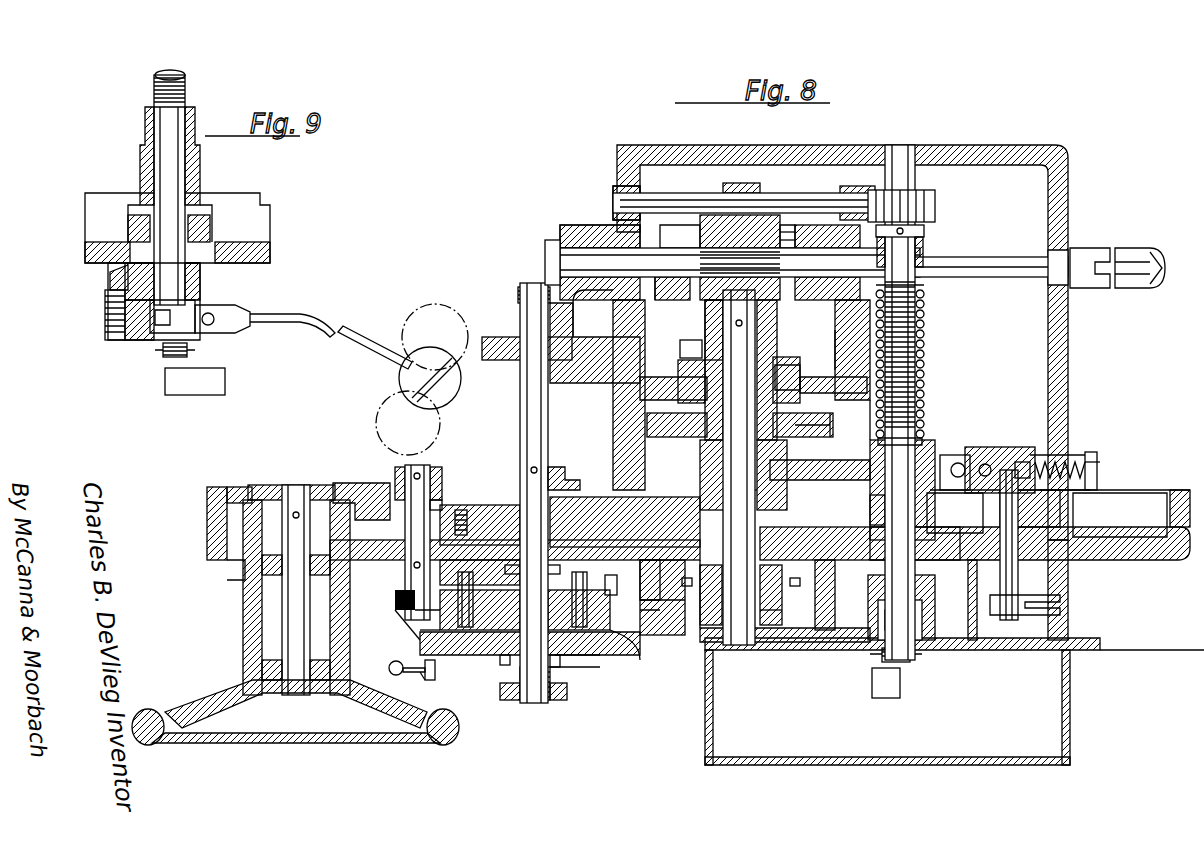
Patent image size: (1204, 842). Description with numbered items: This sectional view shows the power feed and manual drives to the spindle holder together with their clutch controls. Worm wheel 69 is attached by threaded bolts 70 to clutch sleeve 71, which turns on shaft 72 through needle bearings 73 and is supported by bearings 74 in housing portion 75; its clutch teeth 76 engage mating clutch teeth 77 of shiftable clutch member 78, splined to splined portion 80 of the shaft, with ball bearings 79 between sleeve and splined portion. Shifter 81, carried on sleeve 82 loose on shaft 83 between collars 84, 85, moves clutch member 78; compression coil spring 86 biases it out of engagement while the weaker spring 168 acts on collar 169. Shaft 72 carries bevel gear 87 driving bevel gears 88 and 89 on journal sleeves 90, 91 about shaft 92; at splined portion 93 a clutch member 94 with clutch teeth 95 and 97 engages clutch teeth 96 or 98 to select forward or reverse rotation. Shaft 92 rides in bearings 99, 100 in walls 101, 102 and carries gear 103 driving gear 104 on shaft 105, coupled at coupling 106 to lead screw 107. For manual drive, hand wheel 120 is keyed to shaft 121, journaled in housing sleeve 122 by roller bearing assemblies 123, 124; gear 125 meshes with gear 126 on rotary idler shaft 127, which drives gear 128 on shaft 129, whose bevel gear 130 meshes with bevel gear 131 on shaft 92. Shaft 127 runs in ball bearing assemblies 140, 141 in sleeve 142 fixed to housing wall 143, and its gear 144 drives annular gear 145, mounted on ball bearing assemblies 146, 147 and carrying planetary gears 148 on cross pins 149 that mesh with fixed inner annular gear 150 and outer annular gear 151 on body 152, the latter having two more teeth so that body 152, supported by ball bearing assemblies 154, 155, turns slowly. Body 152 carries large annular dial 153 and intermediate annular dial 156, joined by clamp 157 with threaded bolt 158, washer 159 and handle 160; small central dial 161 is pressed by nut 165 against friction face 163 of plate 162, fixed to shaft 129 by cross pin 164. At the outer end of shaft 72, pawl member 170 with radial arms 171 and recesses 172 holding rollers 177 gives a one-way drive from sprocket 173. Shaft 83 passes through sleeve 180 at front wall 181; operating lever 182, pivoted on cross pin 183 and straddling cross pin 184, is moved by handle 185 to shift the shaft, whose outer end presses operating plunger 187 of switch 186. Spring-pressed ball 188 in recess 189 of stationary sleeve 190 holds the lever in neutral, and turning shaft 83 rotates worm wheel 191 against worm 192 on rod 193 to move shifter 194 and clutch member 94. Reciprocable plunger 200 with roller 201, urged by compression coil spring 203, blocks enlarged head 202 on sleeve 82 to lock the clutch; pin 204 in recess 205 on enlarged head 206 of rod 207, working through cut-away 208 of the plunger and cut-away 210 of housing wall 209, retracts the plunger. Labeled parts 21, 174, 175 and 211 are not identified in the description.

In FIG. 8, the bearing 21 is at (805, 588).
In FIG. 8, the worm wheel 69 is at (835, 424).
In FIG. 8, the threaded bolts 70 is at (685, 438).
In FIG. 8, the clutch sleeve 71 is at (783, 365).
In FIG. 8, the shaft 72 is at (739, 467).
In FIG. 8, the needle bearings 73 is at (777, 322).
In FIG. 8, the bearings 74 is at (800, 370).
In FIG. 8, the housing portion 75 is at (630, 356).
In FIG. 8, the clutch teeth 76 is at (783, 445).
In FIG. 8, the clutch teeth 77 is at (705, 450).
In FIG. 8, the shiftable clutch member 78 is at (775, 495).
In FIG. 8, the ball bearings 79 is at (790, 414).
In FIG. 8, the splined portion 80 is at (728, 495).
In FIG. 8, the shifter 81 is at (825, 480).
In FIG. 8, the sleeve 82 is at (918, 412).
In FIG. 9, the shaft 83 is at (180, 122).
In FIG. 8, the shaft 83 is at (916, 395).
In FIG. 8, the collar 84 is at (920, 510).
In FIG. 8, the collar 85 is at (925, 392).
In FIG. 8, the compression coil spring 86 is at (878, 420).
In FIG. 8, the bevel gear 87 is at (700, 330).
In FIG. 8, the bevel gear 88 is at (840, 330).
In FIG. 8, the bevel gear 89 is at (705, 300).
In FIG. 8, the journal sleeve 90 is at (798, 245).
In FIG. 8, the journal sleeve 91 is at (660, 302).
In FIG. 8, the shaft 92 is at (740, 262).
In FIG. 8, the splined portion 93 is at (690, 290).
In FIG. 8, the clutch member 94 is at (780, 222).
In FIG. 8, the clutch teeth 95 is at (788, 222).
In FIG. 8, the clutch teeth 96 is at (795, 225).
In FIG. 8, the clutch teeth 97 is at (725, 215).
In FIG. 8, the clutch teeth 98 is at (700, 222).
In FIG. 8, the bearing 99 is at (600, 226).
In FIG. 8, the bearing 100 is at (845, 350).
In FIG. 8, the wall 101 is at (625, 312).
In FIG. 8, the wall 102 is at (848, 347).
In FIG. 8, the gear 103 is at (924, 248).
In FIG. 8, the gear 104 is at (924, 231).
In FIG. 8, the shaft 105 is at (980, 277).
In FIG. 8, the coupling 106 is at (1112, 292).
In FIG. 8, the lead screw 107 is at (1132, 258).
In FIG. 8, the hand wheel 120 is at (448, 745).
In FIG. 8, the shaft 121 is at (282, 595).
In FIG. 8, the housing sleeve 122 is at (262, 620).
In FIG. 8, the roller bearing assembly 123 is at (262, 650).
In FIG. 8, the roller bearing assembly 124 is at (275, 530).
In FIG. 8, the gear 125 is at (265, 487).
In FIG. 8, the gear 126 is at (358, 487).
In FIG. 8, the rotary idler shaft 127 is at (430, 478).
In FIG. 8, the gear 128 is at (562, 470).
In FIG. 8, the shaft 129 is at (548, 402).
In FIG. 8, the bevel gear 130 is at (518, 300).
In FIG. 8, the bevel gear 131 is at (548, 245).
In FIG. 8, the ball bearing assembly 140 is at (432, 480).
In FIG. 8, the ball bearing assembly 141 is at (442, 500).
In FIG. 8, the sleeve 142 is at (468, 518).
In FIG. 8, the housing wall 143 is at (478, 540).
In FIG. 8, the gear 144 is at (440, 580).
In FIG. 8, the annular gear 145 is at (448, 578).
In FIG. 8, the ball bearing assembly 146 is at (568, 578).
In FIG. 8, the ball bearing assembly 147 is at (518, 572).
In FIG. 8, the planetary gears 148 is at (590, 622).
In FIG. 8, the cross pins 149 is at (608, 578).
In FIG. 8, the inner annular gear 150 is at (655, 570).
In FIG. 8, the outer annular gear 151 is at (650, 630).
In FIG. 8, the body 152 is at (485, 655).
In FIG. 8, the large annular dial 153 is at (400, 640).
In FIG. 8, the ball bearing assembly 154 is at (500, 660).
In FIG. 8, the ball bearing assembly 155 is at (615, 665).
In FIG. 8, the intermediate annular dial 156 is at (398, 675).
In FIG. 8, the clamp 157 is at (428, 672).
In FIG. 8, the threaded bolt 158 is at (440, 672).
In FIG. 8, the washer 159 is at (420, 680).
In FIG. 8, the handle 160 is at (415, 650).
In FIG. 8, the small central dial 161 is at (598, 660).
In FIG. 8, the plate 162 is at (565, 665).
In FIG. 8, the friction face 163 is at (580, 680).
In FIG. 8, the cross pin 164 is at (535, 700).
In FIG. 8, the nut 165 is at (552, 702).
In FIG. 8, the compression coil spring 168 is at (925, 333).
In FIG. 8, the collar 169 is at (925, 300).
In FIG. 8, the pawl member 170 is at (760, 642).
In FIG. 8, the radial arms 171 is at (782, 598).
In FIG. 8, the recesses 172 is at (715, 645).
In FIG. 8, the sprocket 173 is at (690, 640).
In FIG. 8, the bearing 174 is at (775, 585).
In FIG. 8, the bearing 175 is at (782, 612).
In FIG. 8, the rollers 177 is at (665, 620).
In FIG. 9, the sleeve 180 is at (135, 340).
In FIG. 8, the sleeve 180 is at (935, 600).
In FIG. 9, the front wall 181 is at (85, 258).
In FIG. 8, the front wall 181 is at (860, 533).
In FIG. 9, the operating lever 182 is at (352, 343).
In FIG. 9, the cross pin 183 is at (214, 317).
In FIG. 9, the cross pin 184 is at (158, 335).
In FIG. 8, the cross pin 184 is at (878, 612).
In FIG. 9, the handle 185 is at (400, 387).
In FIG. 9, the snap-acting switch 186 is at (215, 392).
In FIG. 8, the snap-acting switch 186 is at (900, 688).
In FIG. 9, the operating plunger 187 is at (190, 348).
In FIG. 8, the operating plunger 187 is at (878, 662).
In FIG. 9, the spring-pressed ball 188 is at (108, 310).
In FIG. 9, the recess 189 is at (115, 282).
In FIG. 9, the stationary sleeve 190 is at (128, 272).
In FIG. 8, the worm wheel 191 is at (935, 200).
In FIG. 8, the worm 192 is at (862, 165).
In FIG. 8, the rod 193 is at (613, 195).
In FIG. 8, the shifter 194 is at (748, 193).
In FIG. 8, the plunger 200 is at (1000, 447).
In FIG. 8, the roller 201 is at (985, 463).
In FIG. 8, the enlarged head 202 is at (958, 462).
In FIG. 8, the compression coil spring 203 is at (1088, 470).
In FIG. 8, the pin 204 is at (1095, 455).
In FIG. 8, the recess 205 is at (1075, 458).
In FIG. 8, the enlarged head 206 is at (1070, 490).
In FIG. 8, the rod 207 is at (1020, 530).
In FIG. 8, the cut-away 208 is at (1045, 455).
In FIG. 8, the housing wall 209 is at (1022, 462).
In FIG. 8, the cut-away 210 is at (990, 505).
In FIG. 8, the fork 211 is at (1020, 615).